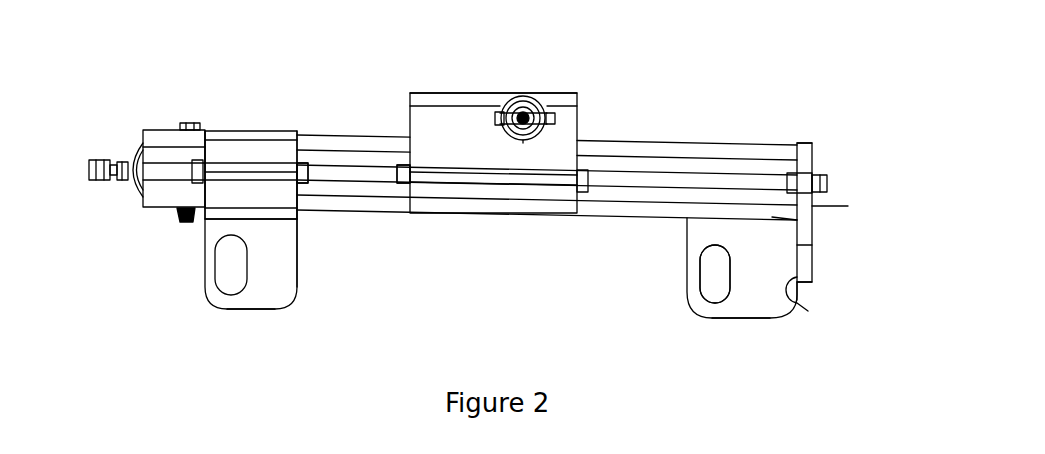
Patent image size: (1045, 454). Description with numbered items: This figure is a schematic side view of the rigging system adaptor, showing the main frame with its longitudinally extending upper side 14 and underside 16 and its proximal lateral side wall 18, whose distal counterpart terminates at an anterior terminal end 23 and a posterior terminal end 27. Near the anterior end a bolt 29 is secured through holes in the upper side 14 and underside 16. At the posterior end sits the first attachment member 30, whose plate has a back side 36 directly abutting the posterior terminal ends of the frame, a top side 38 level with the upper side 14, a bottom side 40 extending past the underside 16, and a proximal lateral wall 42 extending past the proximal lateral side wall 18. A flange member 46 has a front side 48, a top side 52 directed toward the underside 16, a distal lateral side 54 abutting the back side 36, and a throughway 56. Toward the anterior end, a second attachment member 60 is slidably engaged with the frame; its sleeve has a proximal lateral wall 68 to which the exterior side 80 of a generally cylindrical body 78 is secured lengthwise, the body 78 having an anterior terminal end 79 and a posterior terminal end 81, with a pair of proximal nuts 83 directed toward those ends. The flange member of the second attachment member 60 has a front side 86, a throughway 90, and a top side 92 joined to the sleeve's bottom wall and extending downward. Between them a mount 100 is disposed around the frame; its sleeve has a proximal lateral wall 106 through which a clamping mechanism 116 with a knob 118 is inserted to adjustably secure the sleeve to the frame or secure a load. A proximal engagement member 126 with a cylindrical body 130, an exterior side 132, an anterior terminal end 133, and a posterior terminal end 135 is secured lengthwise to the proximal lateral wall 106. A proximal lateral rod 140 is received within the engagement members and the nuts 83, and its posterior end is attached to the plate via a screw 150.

The upper side 14 is at (339, 130).
The underside 16 is at (625, 218).
The proximal lateral side wall 18 is at (372, 192).
The anterior terminal end 23 is at (160, 190).
The posterior terminal end 27 is at (843, 204).
The bolt 29 is at (190, 122).
The first attachment member 30 is at (783, 337).
The back side 36 is at (797, 160).
The top side 38 is at (802, 143).
The bottom side 40 is at (812, 282).
The proximal lateral wall 42 is at (798, 245).
The flange member 46 is at (752, 335).
The front side 48 is at (695, 300).
The top side 52 is at (777, 218).
The distal lateral side 54 is at (810, 311).
The throughway 56 is at (713, 293).
The second attachment member 60 is at (248, 330).
The proximal lateral wall 68 is at (247, 150).
The body 78 is at (275, 183).
The anterior terminal end 79 is at (208, 177).
The exterior side 80 is at (237, 177).
The posterior terminal end 81 is at (293, 165).
The pair of proximal nuts 83 is at (192, 172).
The front side 86 is at (270, 305).
The throughway 90 is at (225, 283).
The top side 92 is at (276, 222).
The mount 100 is at (499, 57).
The proximal lateral wall 106 is at (567, 140).
The clamping mechanism 116 is at (532, 92).
The knob 118 is at (523, 143).
The proximal engagement member 126 is at (457, 188).
The body 130 is at (543, 184).
The exterior side 132 is at (442, 177).
The anterior terminal end 133 is at (412, 177).
The posterior terminal end 135 is at (565, 177).
The proximal lateral rod 140 is at (684, 190).
The screw 150 is at (829, 182).